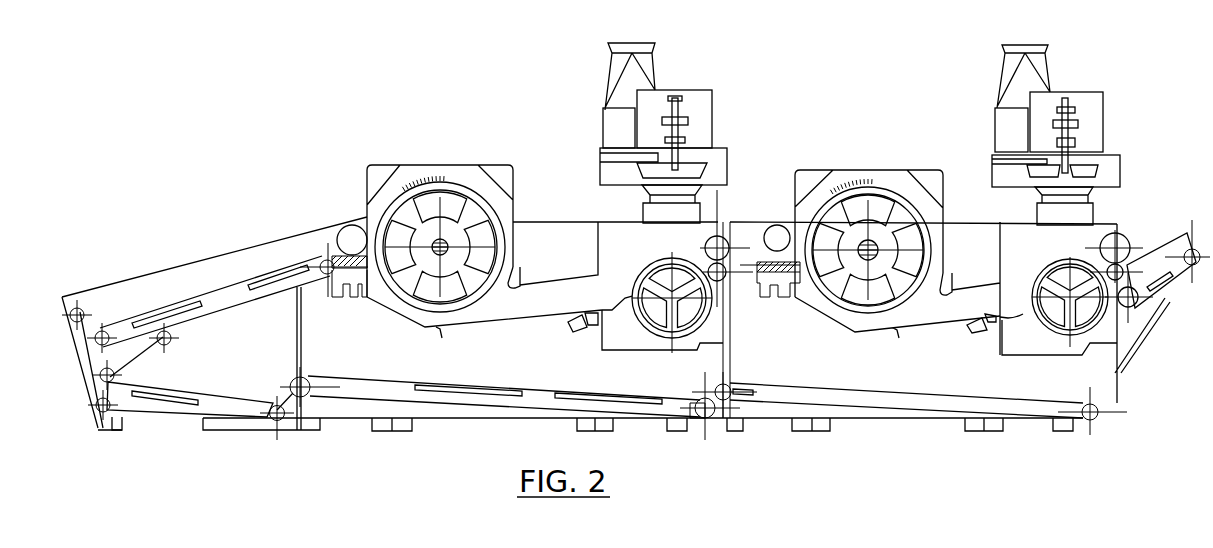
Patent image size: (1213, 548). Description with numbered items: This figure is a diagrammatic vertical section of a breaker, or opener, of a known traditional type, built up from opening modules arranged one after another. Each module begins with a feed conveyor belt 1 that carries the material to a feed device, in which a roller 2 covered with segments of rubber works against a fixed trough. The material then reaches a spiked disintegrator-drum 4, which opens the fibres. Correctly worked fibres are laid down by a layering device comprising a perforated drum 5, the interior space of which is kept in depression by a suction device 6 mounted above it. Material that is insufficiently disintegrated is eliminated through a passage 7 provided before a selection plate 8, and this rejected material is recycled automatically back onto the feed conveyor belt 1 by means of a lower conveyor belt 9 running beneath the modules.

The feed conveyor belt 1 is at (204, 286).
The roller 2 is at (342, 236).
The spiked disintegrator-drum 4 is at (465, 193).
The perforated drum 5 is at (683, 249).
The suction device 6 is at (705, 98).
The passage 7 is at (382, 297).
The selection plate 8 is at (412, 320).
The conveyor belt 9 is at (463, 385).